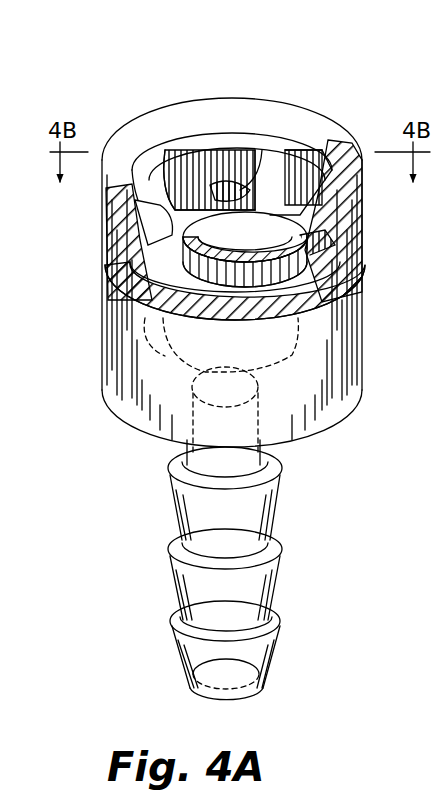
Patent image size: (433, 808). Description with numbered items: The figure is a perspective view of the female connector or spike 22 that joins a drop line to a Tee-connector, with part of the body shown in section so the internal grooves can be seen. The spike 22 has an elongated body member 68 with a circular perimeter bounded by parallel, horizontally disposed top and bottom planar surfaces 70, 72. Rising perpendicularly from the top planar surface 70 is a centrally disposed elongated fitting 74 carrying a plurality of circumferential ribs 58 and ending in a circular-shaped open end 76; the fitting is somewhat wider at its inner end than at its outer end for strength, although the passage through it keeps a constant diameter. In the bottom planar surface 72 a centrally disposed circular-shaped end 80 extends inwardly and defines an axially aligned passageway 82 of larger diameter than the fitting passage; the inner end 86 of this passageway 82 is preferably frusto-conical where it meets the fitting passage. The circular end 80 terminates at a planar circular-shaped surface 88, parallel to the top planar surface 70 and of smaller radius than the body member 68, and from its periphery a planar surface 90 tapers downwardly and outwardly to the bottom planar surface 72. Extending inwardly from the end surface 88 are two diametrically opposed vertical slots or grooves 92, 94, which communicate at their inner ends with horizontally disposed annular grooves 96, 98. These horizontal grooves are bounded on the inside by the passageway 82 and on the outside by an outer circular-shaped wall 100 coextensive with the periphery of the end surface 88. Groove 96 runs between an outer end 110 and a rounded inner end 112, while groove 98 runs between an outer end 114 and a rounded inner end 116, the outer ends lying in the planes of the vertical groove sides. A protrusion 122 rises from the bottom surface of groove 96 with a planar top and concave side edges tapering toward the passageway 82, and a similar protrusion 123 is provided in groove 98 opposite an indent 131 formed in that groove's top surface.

The female member or spike 22 is at (253, 92).
The circumferential ribs 58 is at (288, 552).
The elongated body member 68 is at (366, 332).
The top planar surface 70 is at (135, 428).
The bottom planar surface 72 is at (298, 137).
The elongated fitting 74 is at (170, 572).
The circular-shaped open end 76 is at (262, 692).
The circular-shaped end 80 is at (240, 147).
The axial alined passageway 82 is at (219, 353).
The inner end of passageway 82 86 is at (278, 392).
The planar circular-shaped surface 88 is at (203, 133).
The planar surface 90 is at (217, 120).
The vertically disposed slot or groove 92 is at (147, 193).
The vertically disposed slot or groove 94 is at (300, 113).
The horizontally disposed annular-shaped slot or groove 96 is at (206, 186).
The horizontally disposed annular-shaped slot or groove 98 is at (330, 240).
The outer circular-shaped wall 100 is at (310, 157).
The outer end of groove 96 110 is at (145, 228).
The inner end of groove 96 112 is at (245, 190).
The outer end of groove 98 114 is at (323, 160).
The inner end of groove 98 116 is at (216, 305).
The protrusion 122 is at (148, 267).
The protrusion 123 is at (350, 277).
The indent 131 is at (325, 228).